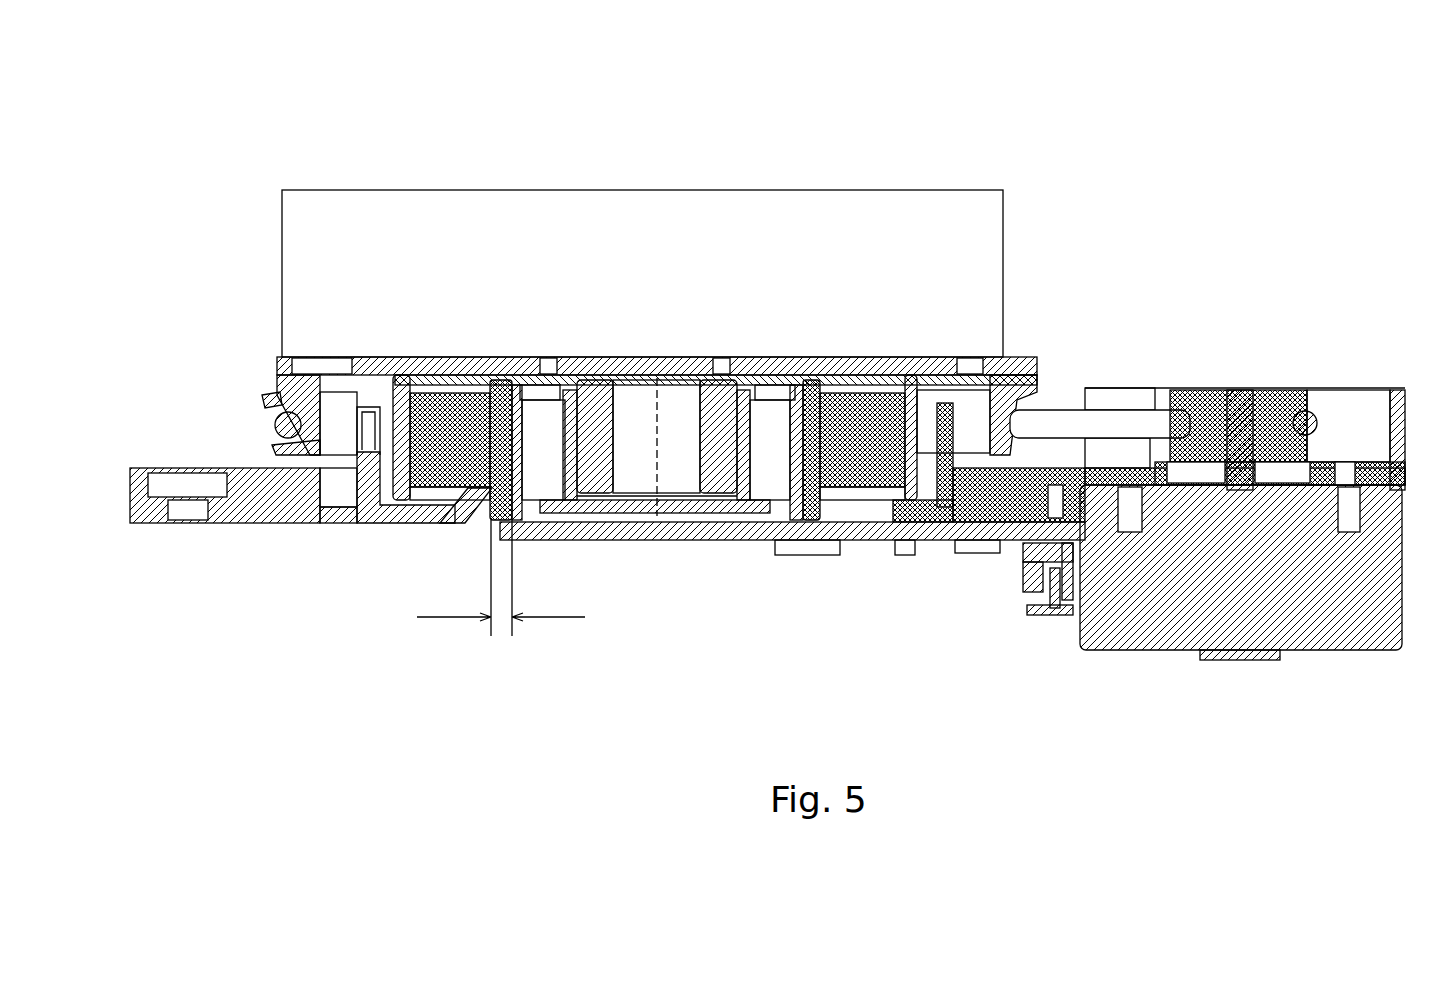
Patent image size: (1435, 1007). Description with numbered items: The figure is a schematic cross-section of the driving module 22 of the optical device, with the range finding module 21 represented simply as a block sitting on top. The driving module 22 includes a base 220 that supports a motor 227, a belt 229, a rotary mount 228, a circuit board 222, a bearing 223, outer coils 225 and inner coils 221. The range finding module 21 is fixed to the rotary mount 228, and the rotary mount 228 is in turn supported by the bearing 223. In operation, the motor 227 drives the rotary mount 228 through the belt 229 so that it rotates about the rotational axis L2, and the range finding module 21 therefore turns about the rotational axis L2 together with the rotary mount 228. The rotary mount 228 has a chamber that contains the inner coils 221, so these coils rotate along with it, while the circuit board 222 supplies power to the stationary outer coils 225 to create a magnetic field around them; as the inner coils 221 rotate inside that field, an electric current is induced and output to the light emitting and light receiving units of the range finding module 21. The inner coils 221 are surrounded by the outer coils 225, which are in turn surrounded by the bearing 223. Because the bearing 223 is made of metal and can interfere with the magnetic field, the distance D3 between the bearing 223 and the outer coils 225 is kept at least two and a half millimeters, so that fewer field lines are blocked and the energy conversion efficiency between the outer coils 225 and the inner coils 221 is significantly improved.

The range finding module 21 is at (938, 190).
The driving module 22 is at (1227, 281).
The base 220 is at (268, 528).
The inner coils 221 is at (620, 530).
The circuit board 222 is at (879, 545).
The bearing 223 is at (448, 522).
The outer coils 225 is at (533, 497).
The motor 227 is at (1243, 658).
The rotary mount 228 is at (1052, 373).
The belt 229 is at (1310, 412).
The rotational axis L2 is at (685, 530).
The distance between the bearing and the outer coils D3 is at (501, 601).